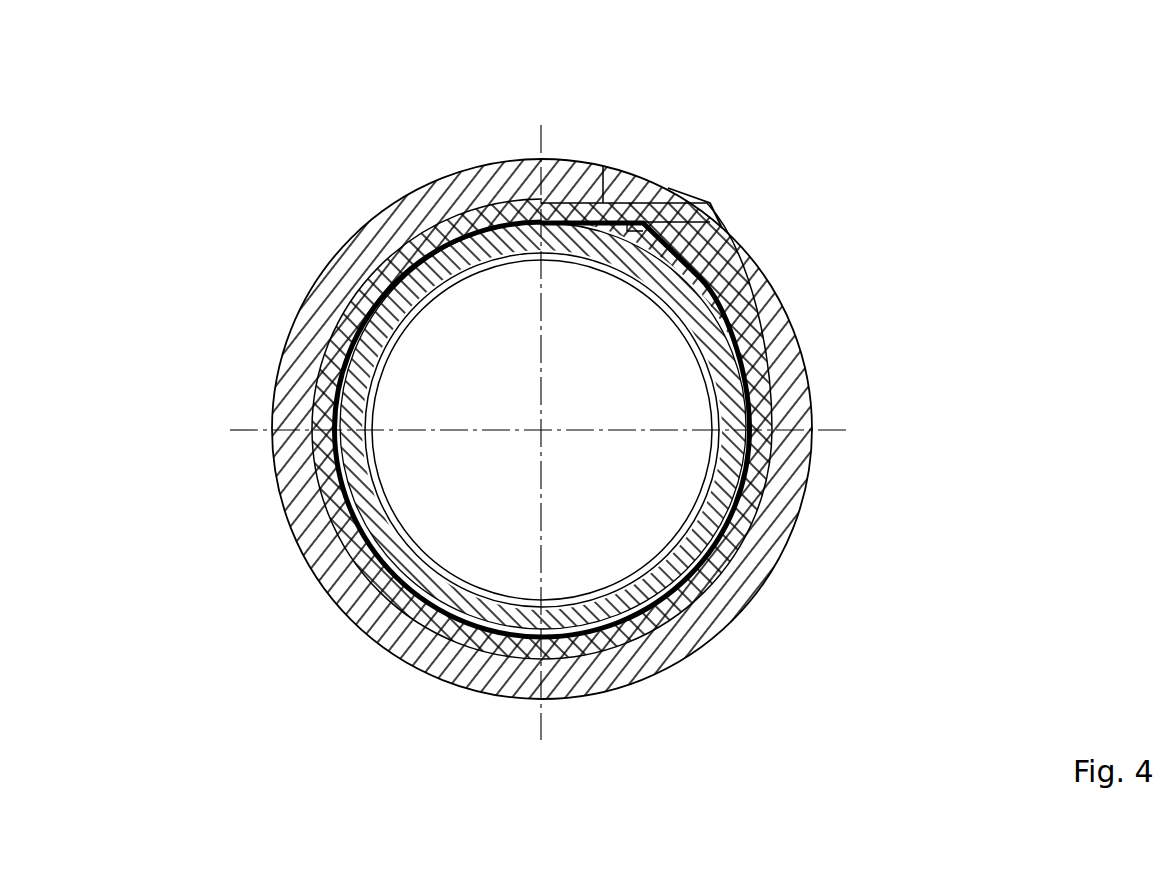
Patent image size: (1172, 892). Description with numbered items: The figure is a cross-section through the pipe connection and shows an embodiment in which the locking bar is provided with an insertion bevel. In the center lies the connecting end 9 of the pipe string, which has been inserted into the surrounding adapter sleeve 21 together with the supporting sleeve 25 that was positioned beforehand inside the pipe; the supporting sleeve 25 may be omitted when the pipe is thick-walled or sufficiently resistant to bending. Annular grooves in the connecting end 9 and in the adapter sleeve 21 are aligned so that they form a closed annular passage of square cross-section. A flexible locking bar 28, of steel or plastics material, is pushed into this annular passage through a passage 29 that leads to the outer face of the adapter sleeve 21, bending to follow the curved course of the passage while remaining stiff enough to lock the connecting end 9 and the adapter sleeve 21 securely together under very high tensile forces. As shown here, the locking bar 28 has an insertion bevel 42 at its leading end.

The adapter sleeve 21 is at (437, 207).
The flexible locking bar 28 is at (697, 275).
The insertion bevel 42 is at (660, 198).
The passage 29 is at (632, 192).
The connecting end 9 is at (725, 362).
The supporting sleeve 25 is at (708, 460).